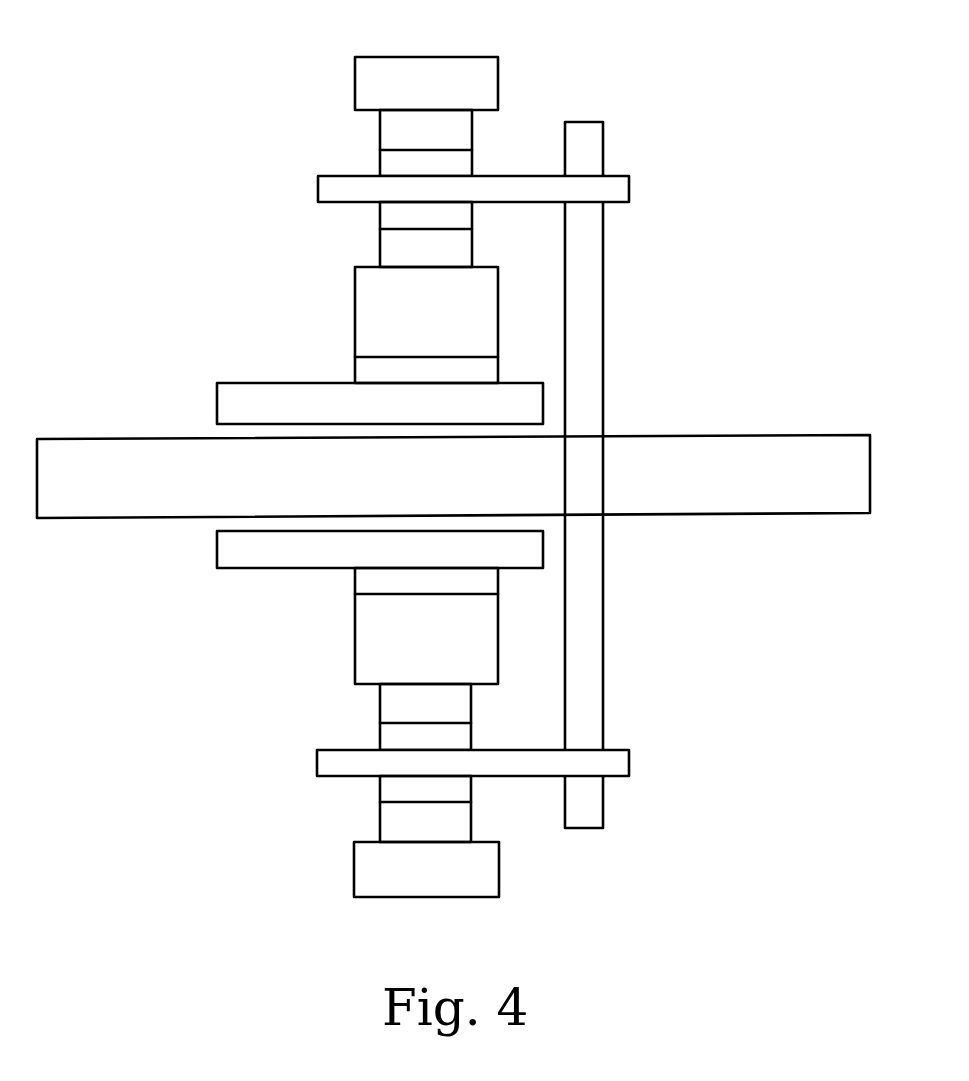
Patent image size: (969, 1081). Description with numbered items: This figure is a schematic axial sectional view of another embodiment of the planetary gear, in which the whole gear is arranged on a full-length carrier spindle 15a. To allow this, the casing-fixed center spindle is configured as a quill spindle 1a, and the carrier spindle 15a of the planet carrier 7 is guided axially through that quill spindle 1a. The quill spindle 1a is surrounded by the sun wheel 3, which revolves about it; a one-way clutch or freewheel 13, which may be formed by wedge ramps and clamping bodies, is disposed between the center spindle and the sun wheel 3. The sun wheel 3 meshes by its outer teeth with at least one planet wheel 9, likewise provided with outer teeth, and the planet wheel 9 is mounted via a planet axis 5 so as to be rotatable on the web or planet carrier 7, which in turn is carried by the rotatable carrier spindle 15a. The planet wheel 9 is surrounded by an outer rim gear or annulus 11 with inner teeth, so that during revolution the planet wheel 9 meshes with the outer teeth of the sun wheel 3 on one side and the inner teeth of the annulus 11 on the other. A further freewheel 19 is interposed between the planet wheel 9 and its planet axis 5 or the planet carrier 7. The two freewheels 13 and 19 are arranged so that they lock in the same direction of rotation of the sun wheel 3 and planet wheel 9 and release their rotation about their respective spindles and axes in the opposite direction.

The annulus 11 is at (452, 65).
The planet wheel 9 is at (392, 133).
The planet axis 5 is at (330, 190).
The freewheel 19 is at (392, 215).
The sun wheel 3 is at (368, 312).
The planet carrier 7 is at (587, 249).
The full-length carrier spindle 15a is at (788, 442).
The quill spindle 1a is at (225, 552).
The freewheel 13 is at (370, 580).